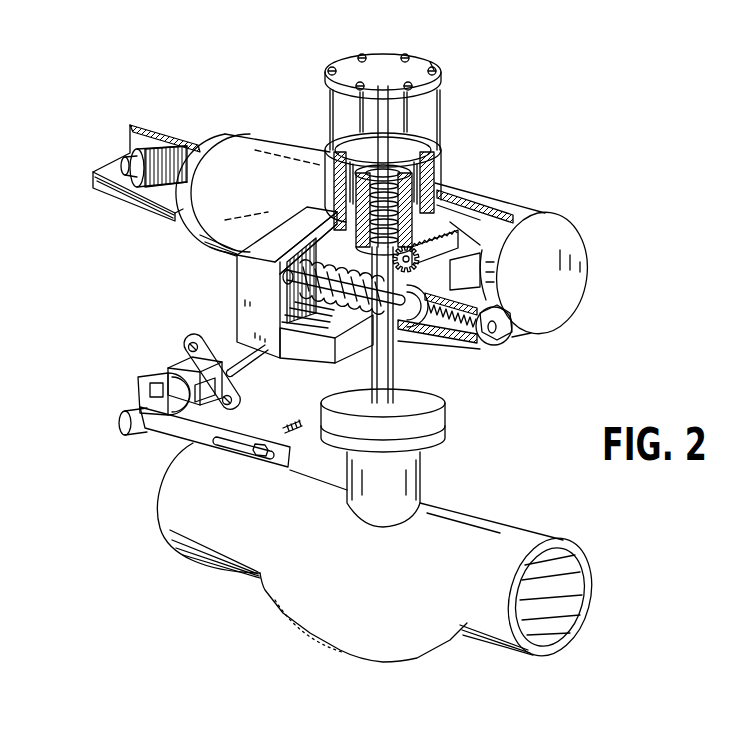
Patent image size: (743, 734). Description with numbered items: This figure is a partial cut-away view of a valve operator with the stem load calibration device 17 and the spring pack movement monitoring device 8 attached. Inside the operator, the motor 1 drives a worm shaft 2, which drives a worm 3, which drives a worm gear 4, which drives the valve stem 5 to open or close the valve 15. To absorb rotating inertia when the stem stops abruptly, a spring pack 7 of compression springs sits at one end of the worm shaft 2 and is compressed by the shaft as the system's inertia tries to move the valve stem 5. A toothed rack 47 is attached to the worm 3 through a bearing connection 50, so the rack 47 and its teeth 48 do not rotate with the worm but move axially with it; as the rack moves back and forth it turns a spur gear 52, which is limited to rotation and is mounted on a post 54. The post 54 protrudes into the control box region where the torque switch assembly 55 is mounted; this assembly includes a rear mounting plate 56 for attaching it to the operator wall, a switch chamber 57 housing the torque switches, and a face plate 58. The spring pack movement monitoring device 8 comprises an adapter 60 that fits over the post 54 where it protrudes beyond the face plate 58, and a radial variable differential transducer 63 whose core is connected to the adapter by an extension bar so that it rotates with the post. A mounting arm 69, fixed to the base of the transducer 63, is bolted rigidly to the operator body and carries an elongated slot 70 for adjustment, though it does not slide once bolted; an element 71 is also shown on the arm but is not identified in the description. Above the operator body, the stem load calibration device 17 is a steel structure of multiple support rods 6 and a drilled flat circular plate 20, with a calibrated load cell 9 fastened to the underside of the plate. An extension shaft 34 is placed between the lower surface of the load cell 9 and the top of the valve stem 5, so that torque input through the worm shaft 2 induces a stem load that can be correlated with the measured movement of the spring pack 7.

The motor 1 is at (170, 136).
The worm shaft 2 is at (300, 222).
The worm 3 is at (330, 252).
The worm gear 4 is at (402, 203).
The valve stem 5 is at (400, 170).
The support rods 6 is at (443, 112).
The spring pack 7 is at (468, 347).
The spring pack movement monitoring device 8 is at (122, 383).
The calibrated load cell 9 is at (341, 108).
The valve 15 is at (425, 477).
The stem load calibration device 17 is at (435, 64).
The drilled flat circular plate 20 is at (382, 70).
The extension shaft 34 is at (368, 137).
The toothed rack 47 is at (418, 315).
The teeth 48 is at (443, 281).
The bearing connection 50 is at (367, 319).
The spur gear 52 is at (427, 243).
The post 54 is at (255, 358).
The torque switch assembly 55 is at (163, 356).
The rear mounting plate 56 is at (199, 337).
The switch chamber 57 is at (180, 370).
The face plate 58 is at (138, 378).
The adapter 60 is at (150, 385).
The radial variable differential transducer 63 is at (117, 437).
The mounting arm 69 is at (190, 440).
The elongated slot 70 is at (237, 453).
The set screw 71 is at (295, 427).